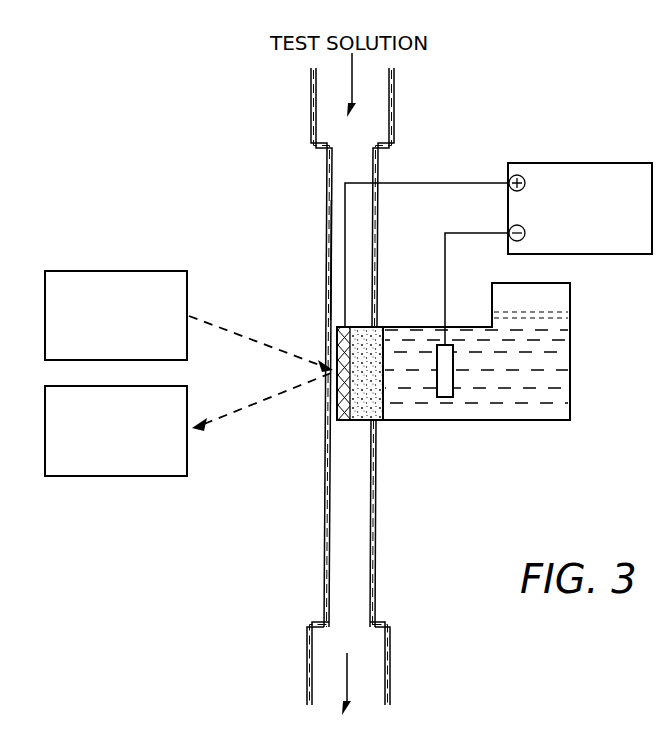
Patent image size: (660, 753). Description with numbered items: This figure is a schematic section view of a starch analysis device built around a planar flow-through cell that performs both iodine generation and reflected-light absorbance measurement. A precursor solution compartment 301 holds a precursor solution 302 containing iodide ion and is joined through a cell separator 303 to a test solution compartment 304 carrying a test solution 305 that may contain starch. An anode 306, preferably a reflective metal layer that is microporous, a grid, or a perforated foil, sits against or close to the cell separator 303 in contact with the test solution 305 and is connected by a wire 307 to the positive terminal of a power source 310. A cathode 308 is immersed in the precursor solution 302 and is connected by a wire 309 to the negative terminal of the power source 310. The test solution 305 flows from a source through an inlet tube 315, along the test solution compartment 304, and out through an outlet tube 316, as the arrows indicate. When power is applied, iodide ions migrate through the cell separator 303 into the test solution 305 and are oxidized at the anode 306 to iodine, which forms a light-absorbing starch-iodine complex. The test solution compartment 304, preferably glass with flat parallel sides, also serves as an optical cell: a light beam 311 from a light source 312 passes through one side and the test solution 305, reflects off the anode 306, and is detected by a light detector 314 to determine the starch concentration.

The precursor solution compartment 301 is at (572, 312).
The precursor solution 302 is at (557, 392).
The cell separator 303 is at (367, 407).
The test solution compartment 304 is at (333, 182).
The test solution 305 is at (335, 260).
The anode 306 is at (337, 338).
The wire 307 is at (415, 183).
The cathode 308 is at (445, 397).
The wire 309 is at (444, 282).
The power source 310 is at (546, 163).
The light beam 311 is at (232, 330).
The light source 312 is at (92, 271).
The light detector 314 is at (82, 476).
The inlet tube 315 is at (395, 100).
The outlet tube 316 is at (390, 680).